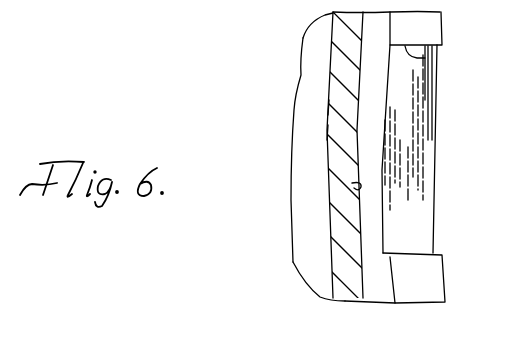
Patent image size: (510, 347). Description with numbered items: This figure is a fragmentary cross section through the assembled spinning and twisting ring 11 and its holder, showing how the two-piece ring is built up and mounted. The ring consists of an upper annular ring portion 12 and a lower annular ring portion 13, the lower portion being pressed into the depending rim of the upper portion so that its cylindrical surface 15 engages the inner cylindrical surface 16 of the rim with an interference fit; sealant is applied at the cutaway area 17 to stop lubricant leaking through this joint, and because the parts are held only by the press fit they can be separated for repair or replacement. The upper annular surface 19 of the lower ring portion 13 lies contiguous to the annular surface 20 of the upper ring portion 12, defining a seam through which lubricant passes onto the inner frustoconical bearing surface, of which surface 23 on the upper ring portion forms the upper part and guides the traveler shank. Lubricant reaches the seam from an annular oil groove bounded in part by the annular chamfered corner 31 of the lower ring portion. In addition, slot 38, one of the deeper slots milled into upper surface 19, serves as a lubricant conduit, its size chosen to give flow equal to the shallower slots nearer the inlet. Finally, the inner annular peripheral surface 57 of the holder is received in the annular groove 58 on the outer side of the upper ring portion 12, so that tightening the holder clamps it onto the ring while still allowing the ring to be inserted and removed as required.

The spinning and twisting ring 11 is at (337, 72).
The upper annular ring portion 12 is at (332, 152).
The lower annular ring portion 13 is at (428, 32).
The cylindrical surface 15 is at (357, 99).
The inner cylindrical surface 16 is at (352, 183).
The cutaway area 17 is at (337, 237).
The upper annular surface 19 is at (418, 286).
The annular surface 20 is at (509, 246).
The surface 23 is at (509, 200).
The annular chamfered corner 31 is at (380, 34).
The slot 38 is at (425, 58).
The inner annular peripheral surface 57 is at (329, 110).
The annular groove 58 is at (328, 133).